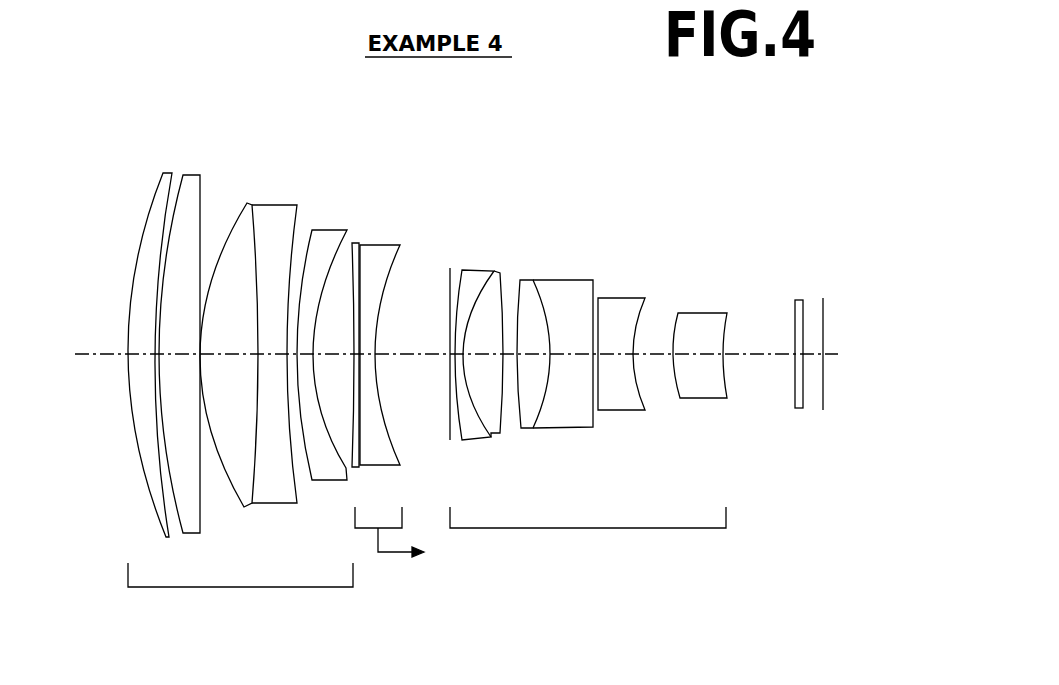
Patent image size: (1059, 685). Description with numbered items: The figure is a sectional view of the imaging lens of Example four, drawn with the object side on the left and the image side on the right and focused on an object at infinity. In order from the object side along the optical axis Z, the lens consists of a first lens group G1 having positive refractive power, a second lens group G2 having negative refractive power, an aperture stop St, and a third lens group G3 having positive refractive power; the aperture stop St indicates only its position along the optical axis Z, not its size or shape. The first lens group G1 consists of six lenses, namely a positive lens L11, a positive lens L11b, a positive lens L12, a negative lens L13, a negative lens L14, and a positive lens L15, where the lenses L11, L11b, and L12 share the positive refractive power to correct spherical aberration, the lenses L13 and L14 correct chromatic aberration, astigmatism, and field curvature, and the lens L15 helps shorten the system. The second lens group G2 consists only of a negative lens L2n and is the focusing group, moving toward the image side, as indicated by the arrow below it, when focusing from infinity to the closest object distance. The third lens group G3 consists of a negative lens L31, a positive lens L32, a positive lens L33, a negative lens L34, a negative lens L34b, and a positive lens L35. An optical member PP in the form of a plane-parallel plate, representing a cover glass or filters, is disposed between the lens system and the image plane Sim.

The positive lens L11 is at (166, 172).
The positive lens L11b is at (192, 172).
The positive lens L12 is at (248, 202).
The negative lens L13 is at (277, 210).
The negative lens L14 is at (330, 231).
The positive lens L15 is at (352, 243).
The negative lens L2n is at (378, 253).
The aperture stop St is at (452, 288).
The negative lens L31 is at (478, 270).
The positive lens L32 is at (495, 273).
The positive lens L33 is at (527, 282).
The negative lens L34 is at (575, 283).
The negative lens L34b is at (625, 303).
The positive lens L35 is at (707, 317).
The optical member PP is at (800, 298).
The image plane Sim is at (823, 410).
The optical axis Z is at (92, 352).
The first lens group G1 is at (240, 591).
The second lens group G2 is at (389, 544).
The third lens group G3 is at (588, 534).